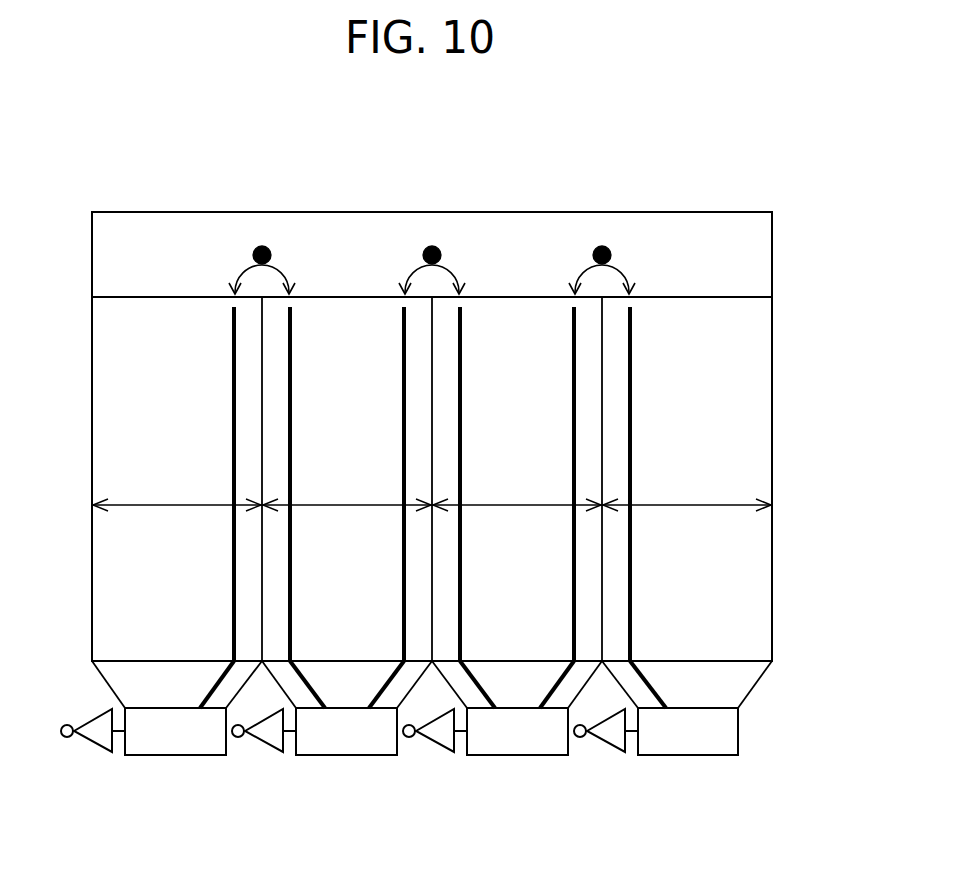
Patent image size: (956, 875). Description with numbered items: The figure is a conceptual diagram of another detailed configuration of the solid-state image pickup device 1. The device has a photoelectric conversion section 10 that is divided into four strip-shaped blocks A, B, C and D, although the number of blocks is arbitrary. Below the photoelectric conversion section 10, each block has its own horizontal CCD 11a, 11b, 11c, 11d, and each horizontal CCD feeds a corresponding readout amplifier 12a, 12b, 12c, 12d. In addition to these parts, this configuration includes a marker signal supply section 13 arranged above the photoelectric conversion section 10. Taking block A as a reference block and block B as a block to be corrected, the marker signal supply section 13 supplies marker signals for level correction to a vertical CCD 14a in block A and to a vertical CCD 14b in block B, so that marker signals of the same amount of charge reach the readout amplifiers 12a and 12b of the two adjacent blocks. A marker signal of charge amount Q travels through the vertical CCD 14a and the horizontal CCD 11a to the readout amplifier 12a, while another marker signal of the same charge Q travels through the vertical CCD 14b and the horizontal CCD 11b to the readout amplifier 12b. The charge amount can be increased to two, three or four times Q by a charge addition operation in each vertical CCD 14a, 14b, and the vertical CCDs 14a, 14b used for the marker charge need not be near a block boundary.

The solid-state image pickup device 1 is at (66, 153).
The photoelectric conversion section 10 is at (471, 502).
The horizontal CCD 11a is at (173, 755).
The horizontal CCD 11b is at (344, 755).
The horizontal CCD 11c is at (515, 755).
The horizontal CCD 11d is at (684, 755).
The readout amplifier 12a is at (92, 750).
The readout amplifier 12b is at (263, 750).
The readout amplifier 12c is at (434, 750).
The readout amplifier 12d is at (605, 750).
The marker signal supply section 13 is at (772, 236).
The vertical CCD 14a is at (234, 405).
The vertical CCD 14b is at (290, 405).